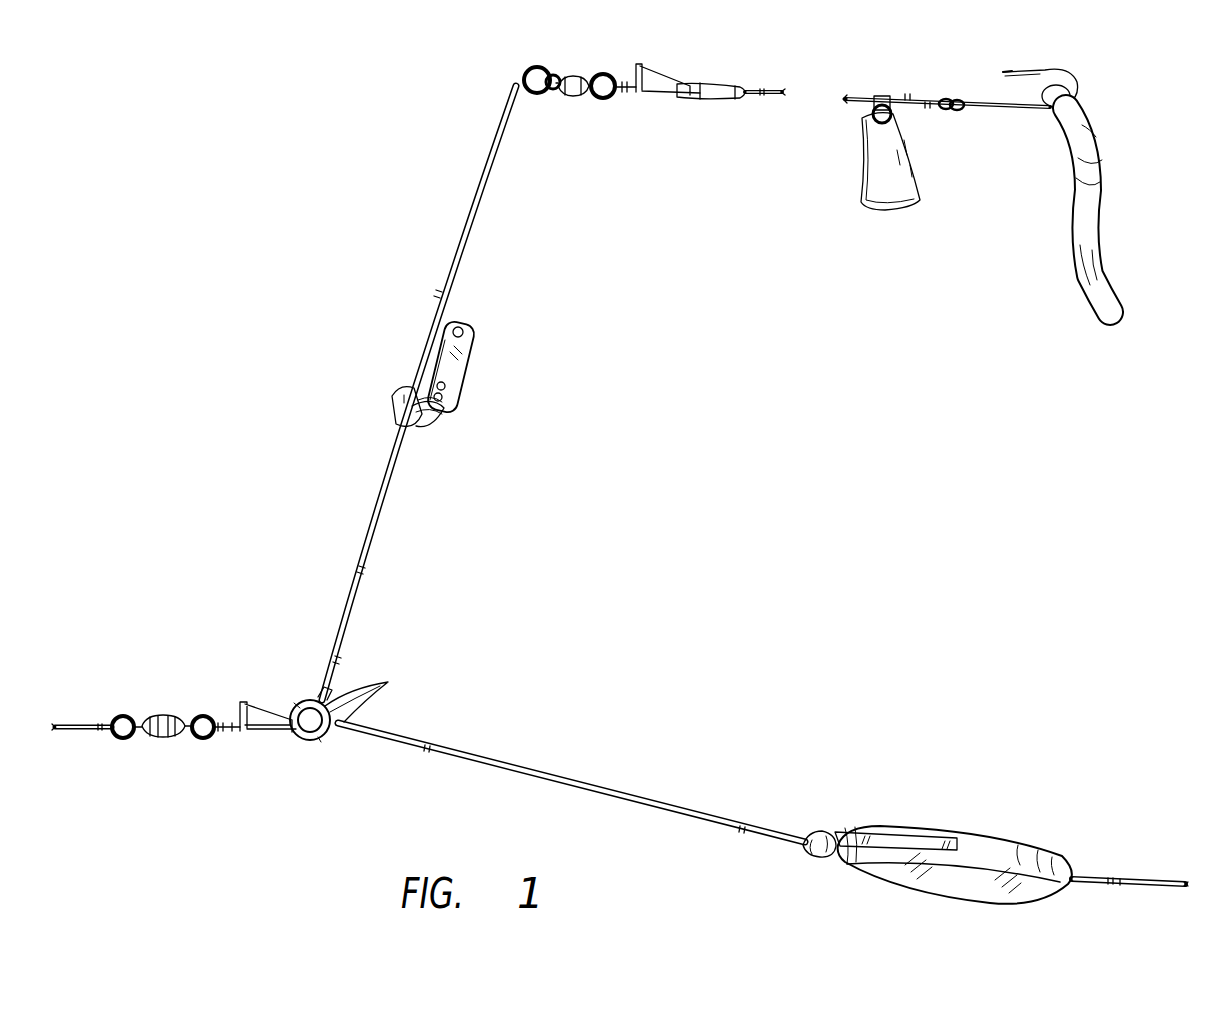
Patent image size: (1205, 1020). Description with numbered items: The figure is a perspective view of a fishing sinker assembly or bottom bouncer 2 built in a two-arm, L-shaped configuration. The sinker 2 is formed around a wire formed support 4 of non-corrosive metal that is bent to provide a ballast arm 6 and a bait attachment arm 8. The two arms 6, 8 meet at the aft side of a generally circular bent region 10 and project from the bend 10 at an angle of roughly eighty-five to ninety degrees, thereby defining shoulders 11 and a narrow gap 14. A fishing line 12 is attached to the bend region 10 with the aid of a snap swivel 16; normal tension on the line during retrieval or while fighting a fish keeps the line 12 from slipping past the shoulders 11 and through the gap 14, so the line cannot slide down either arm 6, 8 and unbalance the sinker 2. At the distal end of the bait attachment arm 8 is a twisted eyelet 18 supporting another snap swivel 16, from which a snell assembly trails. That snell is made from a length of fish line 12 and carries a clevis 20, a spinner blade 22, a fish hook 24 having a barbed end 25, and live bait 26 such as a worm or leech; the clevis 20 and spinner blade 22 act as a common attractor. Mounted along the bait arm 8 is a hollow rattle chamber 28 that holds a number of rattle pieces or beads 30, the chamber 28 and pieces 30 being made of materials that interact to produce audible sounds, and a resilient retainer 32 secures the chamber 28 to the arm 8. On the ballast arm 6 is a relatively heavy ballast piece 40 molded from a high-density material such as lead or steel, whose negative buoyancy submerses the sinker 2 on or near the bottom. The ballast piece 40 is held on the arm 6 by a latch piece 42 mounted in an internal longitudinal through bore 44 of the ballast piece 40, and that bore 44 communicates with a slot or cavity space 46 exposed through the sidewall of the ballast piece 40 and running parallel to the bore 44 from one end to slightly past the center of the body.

The fishing sinker assembly 2 is at (778, 477).
The wire formed support 4 is at (458, 735).
The ballast arm 6 is at (543, 757).
The bait attachment arm 8 is at (365, 477).
The bent region 10 is at (296, 702).
The shoulders 11 is at (374, 689).
The fishing line 12 is at (92, 723).
The narrow gap 14 is at (314, 703).
The snap swivel 16 is at (170, 716).
The twisted eyelet 18 is at (526, 74).
The clevis 20 is at (876, 94).
The spinner blade 22 is at (860, 185).
The fish hook 24 is at (1077, 73).
The barbed end 25 is at (1005, 71).
The live bait 26 is at (1073, 196).
The hollow rattle chamber 28 is at (484, 310).
The rattle pieces 30 is at (445, 391).
The resilient retainer 32 is at (390, 404).
The ballast piece 40 is at (997, 814).
The latch piece 42 is at (818, 830).
The longitudinal through bore 44 is at (1074, 870).
The cavity space 46 is at (907, 836).